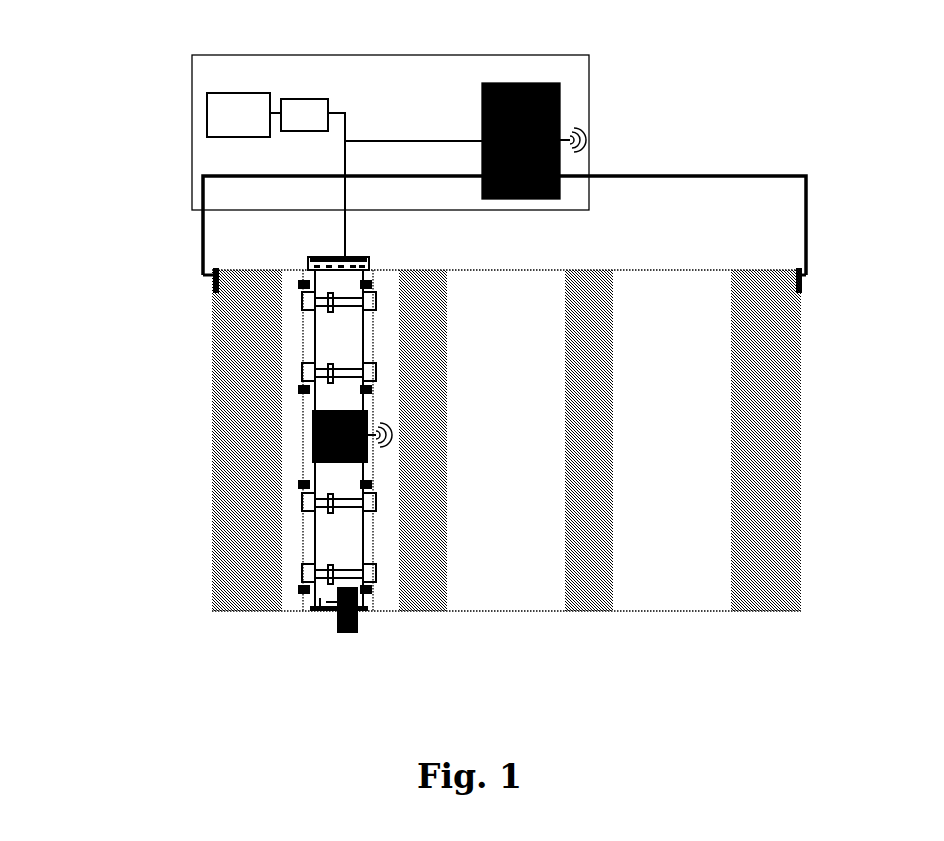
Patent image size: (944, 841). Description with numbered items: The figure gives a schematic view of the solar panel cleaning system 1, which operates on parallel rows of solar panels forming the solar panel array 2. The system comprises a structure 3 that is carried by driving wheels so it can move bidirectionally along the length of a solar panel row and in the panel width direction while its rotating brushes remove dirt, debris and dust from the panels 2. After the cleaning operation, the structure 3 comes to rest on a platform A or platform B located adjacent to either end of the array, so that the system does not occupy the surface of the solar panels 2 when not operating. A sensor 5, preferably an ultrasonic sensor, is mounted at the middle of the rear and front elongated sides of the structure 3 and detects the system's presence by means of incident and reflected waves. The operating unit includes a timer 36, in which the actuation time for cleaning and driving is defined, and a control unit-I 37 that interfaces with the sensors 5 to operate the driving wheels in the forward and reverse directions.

The solar panel cleaning system 1 is at (150, 72).
The control unit-I 37 is at (192, 113).
The timer 36 is at (313, 178).
The solar panel array 2 is at (677, 270).
The sensor 5 is at (222, 266).
The structure 3 is at (300, 405).
The platform A is at (212, 330).
The platform B is at (803, 356).